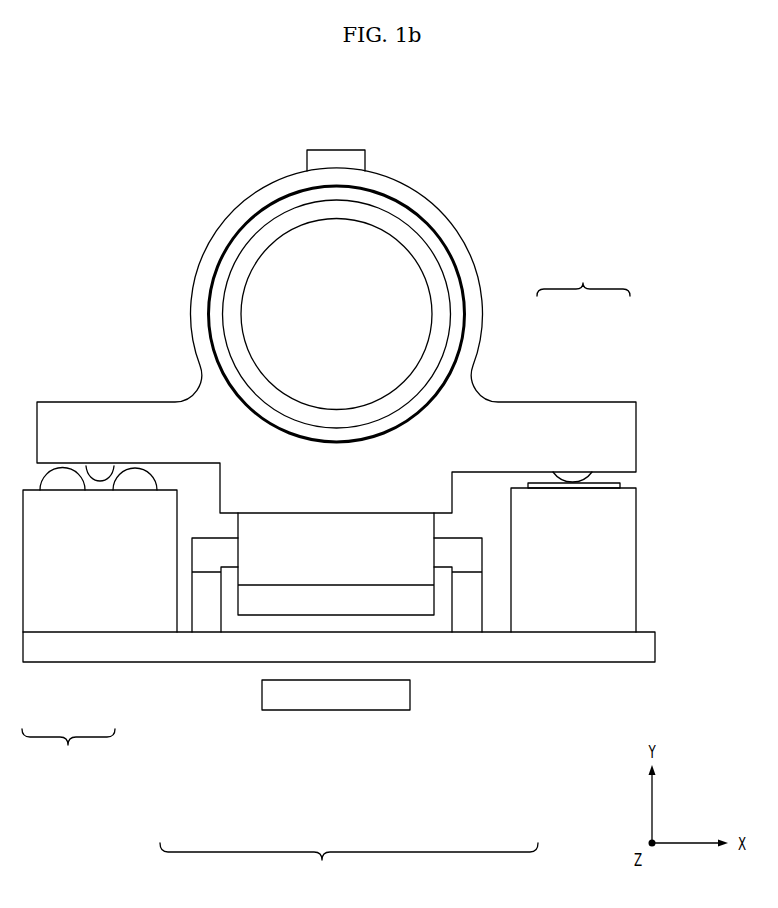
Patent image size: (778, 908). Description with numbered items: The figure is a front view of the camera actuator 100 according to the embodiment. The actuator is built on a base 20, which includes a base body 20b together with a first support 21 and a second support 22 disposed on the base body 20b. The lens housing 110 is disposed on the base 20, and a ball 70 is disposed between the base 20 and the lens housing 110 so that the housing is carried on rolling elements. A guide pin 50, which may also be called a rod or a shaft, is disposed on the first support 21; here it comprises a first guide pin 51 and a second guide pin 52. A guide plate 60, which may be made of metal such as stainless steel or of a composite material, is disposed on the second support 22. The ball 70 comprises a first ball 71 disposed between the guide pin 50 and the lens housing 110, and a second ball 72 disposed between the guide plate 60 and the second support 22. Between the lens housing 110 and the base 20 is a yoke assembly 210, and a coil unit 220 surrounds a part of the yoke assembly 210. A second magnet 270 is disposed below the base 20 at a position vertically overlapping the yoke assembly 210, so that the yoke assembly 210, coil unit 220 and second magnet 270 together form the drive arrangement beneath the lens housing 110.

The camera actuator 100 is at (57, 101).
The lens housing 110 is at (422, 197).
The ball 70 is at (583, 276).
The first ball 71 is at (98, 472).
The second ball 72 is at (573, 480).
The guide plate 60 is at (614, 488).
The coil unit 220 is at (470, 557).
The yoke assembly 210 is at (406, 566).
The guide pin 50 is at (68, 749).
The first guide pin 51 is at (65, 485).
The second guide pin 52 is at (137, 485).
The first support 21 is at (144, 607).
The second support 22 is at (555, 605).
The base body 20b is at (329, 647).
The second magnet 270 is at (375, 700).
The base 20 is at (349, 864).